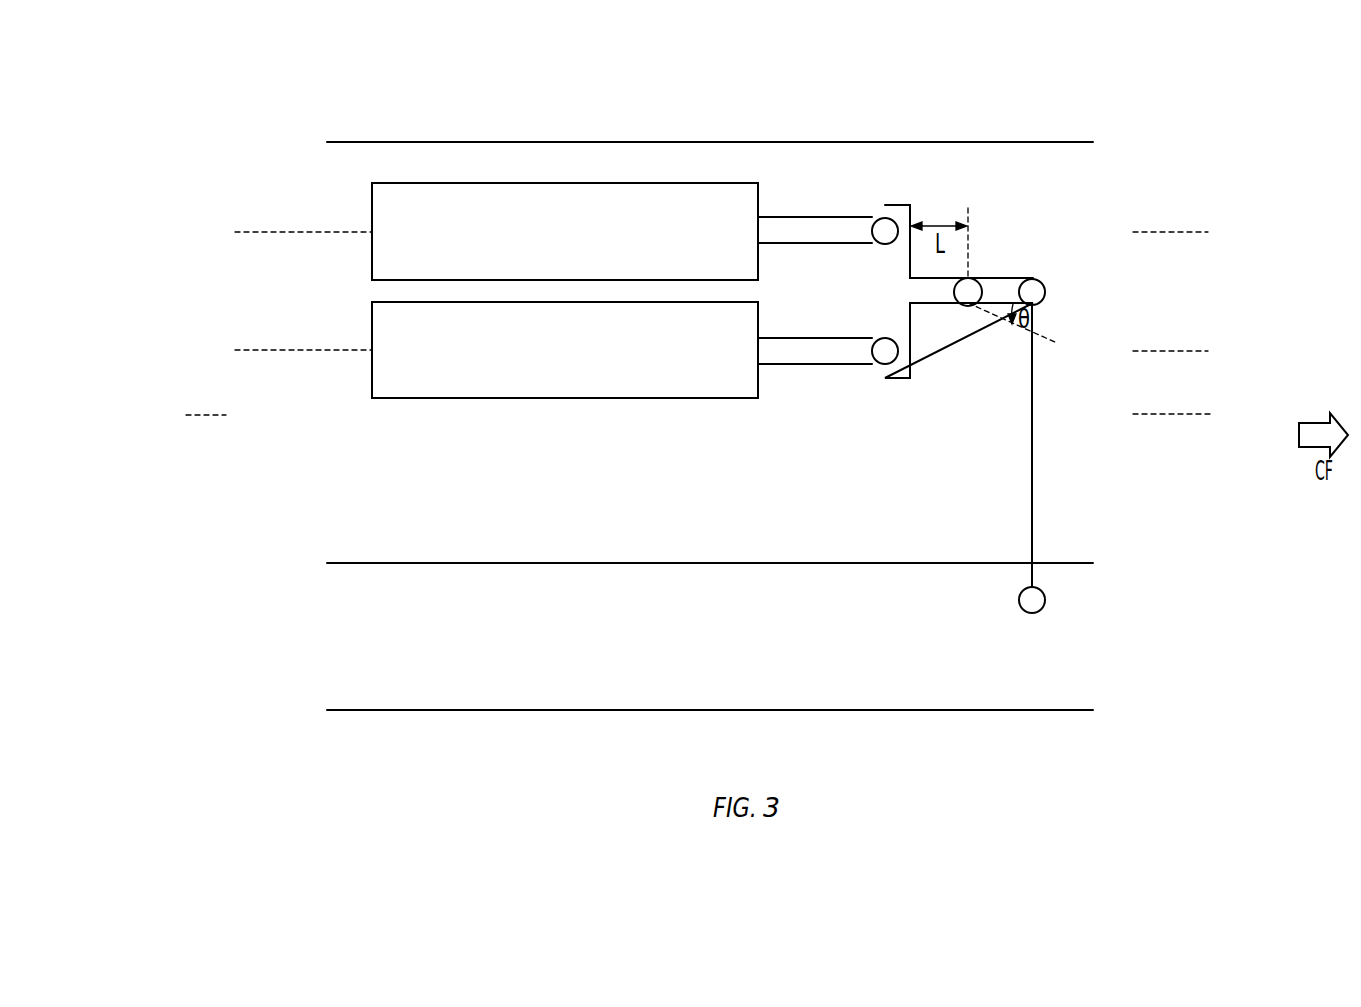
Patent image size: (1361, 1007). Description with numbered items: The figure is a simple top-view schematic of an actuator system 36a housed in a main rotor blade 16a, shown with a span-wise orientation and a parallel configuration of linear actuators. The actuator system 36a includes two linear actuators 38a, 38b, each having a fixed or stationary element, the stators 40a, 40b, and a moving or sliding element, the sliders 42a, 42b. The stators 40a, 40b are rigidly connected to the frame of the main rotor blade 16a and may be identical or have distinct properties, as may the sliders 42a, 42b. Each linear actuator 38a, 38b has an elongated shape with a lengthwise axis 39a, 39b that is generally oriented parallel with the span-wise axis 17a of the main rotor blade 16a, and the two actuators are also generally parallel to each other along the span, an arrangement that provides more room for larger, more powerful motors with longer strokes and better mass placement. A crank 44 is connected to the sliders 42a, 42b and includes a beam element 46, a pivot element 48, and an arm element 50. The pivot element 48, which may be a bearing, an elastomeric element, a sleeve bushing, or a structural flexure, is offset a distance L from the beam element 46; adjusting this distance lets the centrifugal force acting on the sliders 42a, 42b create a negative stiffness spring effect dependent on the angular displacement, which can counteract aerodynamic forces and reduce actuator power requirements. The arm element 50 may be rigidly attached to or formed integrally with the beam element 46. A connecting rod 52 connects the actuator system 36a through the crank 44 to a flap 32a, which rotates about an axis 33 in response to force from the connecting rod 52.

The main rotor blade 16a is at (1022, 177).
The span-wise axis 17a is at (697, 412).
The flap 32a is at (360, 684).
The axis 33 is at (1133, 607).
The actuator system 36a is at (583, 295).
The linear actuator 38a is at (590, 211).
The linear actuator 38b is at (603, 375).
The lengthwise axis 39a is at (724, 230).
The lengthwise axis 39b is at (724, 349).
The stator 40a is at (372, 215).
The stator 40b is at (372, 378).
The slider 42a is at (813, 228).
The slider 42b is at (813, 352).
The crank 44 is at (961, 396).
The beam element 46 is at (886, 288).
The pivot element 48 is at (968, 289).
The arm element 50 is at (1002, 290).
The connecting rod 52 is at (1034, 425).